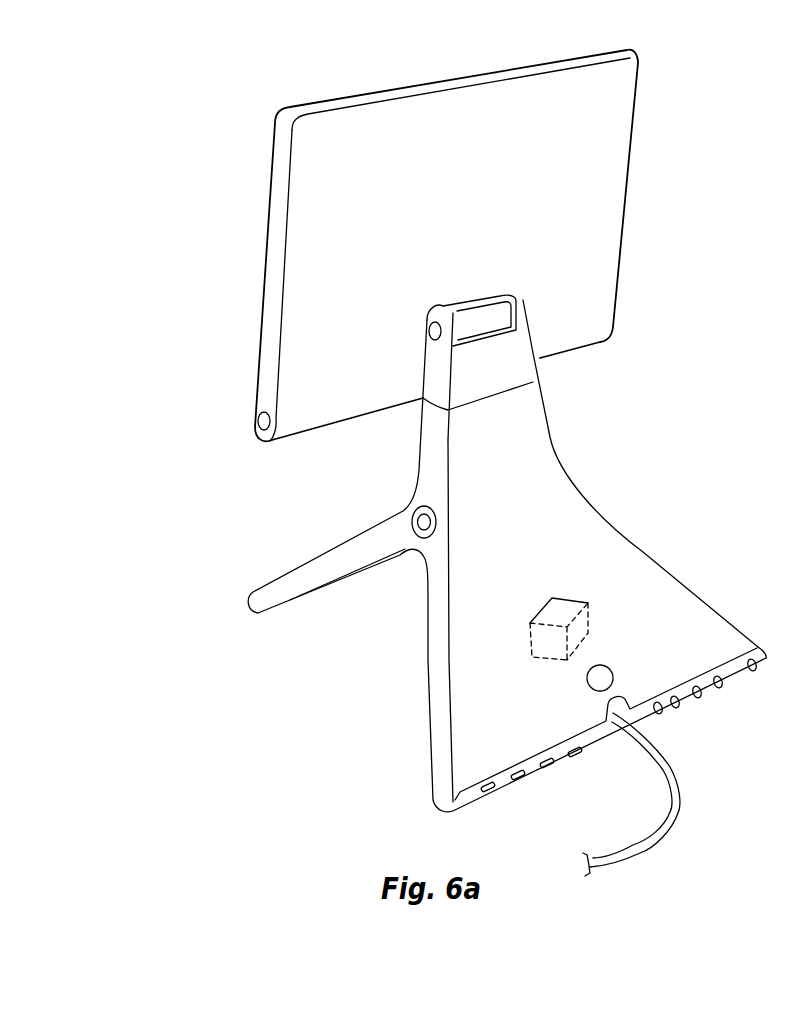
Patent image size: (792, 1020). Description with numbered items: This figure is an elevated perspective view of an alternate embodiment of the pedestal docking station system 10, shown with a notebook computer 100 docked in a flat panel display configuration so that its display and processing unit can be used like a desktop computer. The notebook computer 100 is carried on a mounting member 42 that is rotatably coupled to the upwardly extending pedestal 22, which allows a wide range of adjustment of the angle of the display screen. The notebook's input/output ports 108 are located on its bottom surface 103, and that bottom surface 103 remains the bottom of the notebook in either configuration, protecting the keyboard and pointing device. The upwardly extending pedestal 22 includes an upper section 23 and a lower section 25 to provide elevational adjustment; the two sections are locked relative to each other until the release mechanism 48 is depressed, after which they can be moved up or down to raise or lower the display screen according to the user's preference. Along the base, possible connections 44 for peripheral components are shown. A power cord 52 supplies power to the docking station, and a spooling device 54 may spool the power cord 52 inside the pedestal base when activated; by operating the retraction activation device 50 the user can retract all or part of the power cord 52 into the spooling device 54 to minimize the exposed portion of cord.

The notebook computer 100 is at (450, 246).
The bottom surface 103 is at (590, 141).
The input/output ports 108 is at (488, 296).
The mounting member 42 is at (497, 323).
The upper section 23 is at (433, 368).
The upwardly extending pedestal 22 is at (440, 457).
The lower section 25 is at (495, 473).
The system 10 is at (461, 559).
The spooling device 54 is at (592, 617).
The retraction activation device 50 is at (610, 667).
The release mechanism 48 is at (417, 537).
The connections for peripheral components 44 is at (736, 710).
The power cord 52 is at (680, 810).